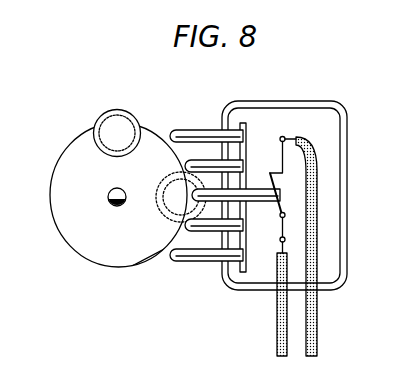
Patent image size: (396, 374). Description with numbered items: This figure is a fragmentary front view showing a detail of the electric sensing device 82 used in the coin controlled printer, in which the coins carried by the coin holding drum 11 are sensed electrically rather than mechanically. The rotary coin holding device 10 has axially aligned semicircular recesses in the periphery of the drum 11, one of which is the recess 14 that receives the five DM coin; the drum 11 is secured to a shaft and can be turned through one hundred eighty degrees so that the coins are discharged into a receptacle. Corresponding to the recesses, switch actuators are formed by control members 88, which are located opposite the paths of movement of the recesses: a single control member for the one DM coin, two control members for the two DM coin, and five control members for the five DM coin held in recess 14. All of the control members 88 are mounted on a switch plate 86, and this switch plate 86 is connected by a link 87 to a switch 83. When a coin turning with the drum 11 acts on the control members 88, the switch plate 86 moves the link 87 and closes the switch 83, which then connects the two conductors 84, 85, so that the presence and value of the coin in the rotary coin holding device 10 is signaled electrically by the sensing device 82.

The rotary coin holding device 10 is at (129, 210).
The coin holding drum 11 is at (86, 245).
The semicircular recess 14 is at (103, 156).
The electric sensing device 82 is at (305, 116).
The switch 83 is at (270, 176).
The conductor 84 is at (277, 348).
The conductor 85 is at (318, 328).
The switch plate 86 is at (251, 258).
The link 87 is at (262, 202).
The control members 88 is at (182, 131).